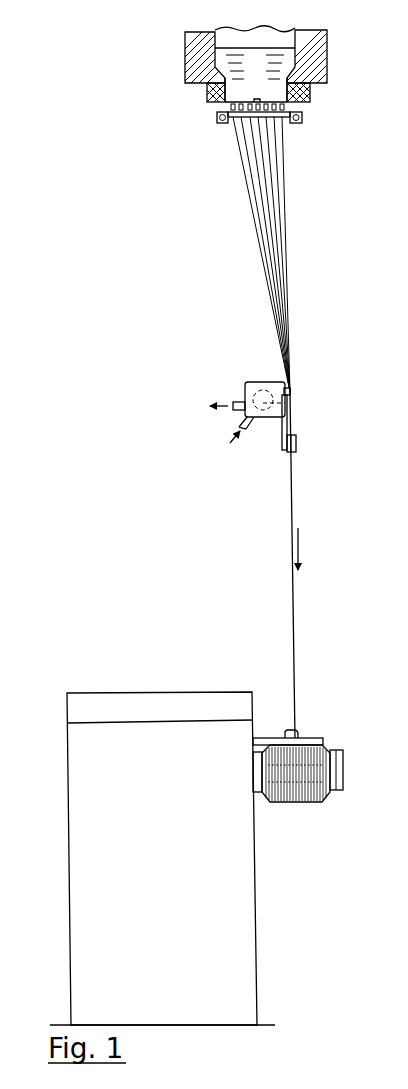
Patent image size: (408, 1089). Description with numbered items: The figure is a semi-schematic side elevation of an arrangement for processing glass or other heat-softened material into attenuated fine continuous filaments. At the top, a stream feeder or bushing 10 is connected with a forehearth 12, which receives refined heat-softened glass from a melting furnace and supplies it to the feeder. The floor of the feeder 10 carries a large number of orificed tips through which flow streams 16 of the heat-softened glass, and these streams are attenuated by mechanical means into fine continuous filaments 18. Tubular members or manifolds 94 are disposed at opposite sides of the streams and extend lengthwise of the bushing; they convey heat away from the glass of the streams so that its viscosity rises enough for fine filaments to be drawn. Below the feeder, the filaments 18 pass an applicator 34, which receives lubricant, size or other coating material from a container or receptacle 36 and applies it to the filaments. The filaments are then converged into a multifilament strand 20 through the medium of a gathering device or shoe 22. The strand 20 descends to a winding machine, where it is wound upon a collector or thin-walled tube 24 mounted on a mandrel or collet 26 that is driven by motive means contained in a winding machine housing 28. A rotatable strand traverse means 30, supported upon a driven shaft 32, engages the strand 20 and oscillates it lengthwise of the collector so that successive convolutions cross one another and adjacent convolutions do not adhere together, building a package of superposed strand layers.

The stream feeder or bushing 10 is at (207, 95).
The forehearth 12 is at (327, 58).
The streams 16 is at (247, 118).
The continuous filaments 18 is at (250, 174).
The multifilament strand 20 is at (290, 505).
The gathering device or shoe 22 is at (297, 447).
The collector or tube 24 is at (330, 795).
The mandrel or collet 26 is at (257, 793).
The winding machine housing 28 is at (67, 693).
The strand traverse means 30 is at (285, 730).
The shaft 32 is at (268, 738).
The applicator 34 is at (292, 394).
The container or receptacle 36 is at (245, 388).
The tubular members or manifolds 94 is at (217, 120).